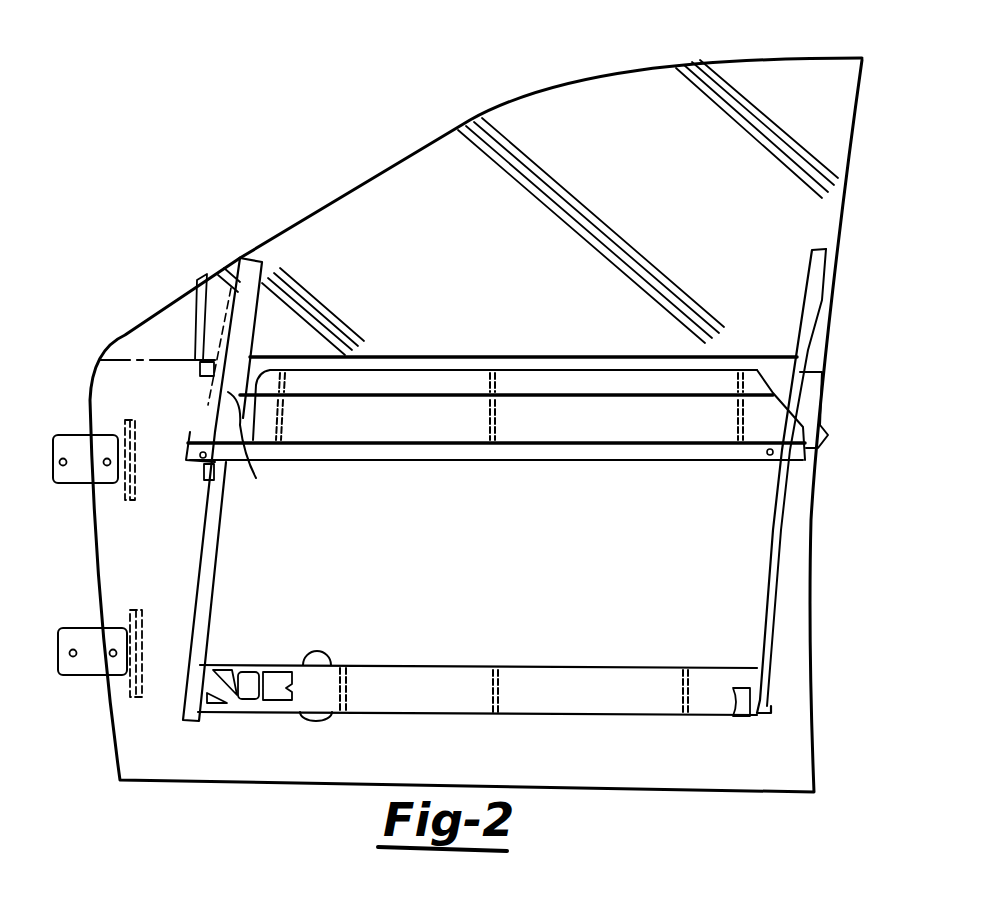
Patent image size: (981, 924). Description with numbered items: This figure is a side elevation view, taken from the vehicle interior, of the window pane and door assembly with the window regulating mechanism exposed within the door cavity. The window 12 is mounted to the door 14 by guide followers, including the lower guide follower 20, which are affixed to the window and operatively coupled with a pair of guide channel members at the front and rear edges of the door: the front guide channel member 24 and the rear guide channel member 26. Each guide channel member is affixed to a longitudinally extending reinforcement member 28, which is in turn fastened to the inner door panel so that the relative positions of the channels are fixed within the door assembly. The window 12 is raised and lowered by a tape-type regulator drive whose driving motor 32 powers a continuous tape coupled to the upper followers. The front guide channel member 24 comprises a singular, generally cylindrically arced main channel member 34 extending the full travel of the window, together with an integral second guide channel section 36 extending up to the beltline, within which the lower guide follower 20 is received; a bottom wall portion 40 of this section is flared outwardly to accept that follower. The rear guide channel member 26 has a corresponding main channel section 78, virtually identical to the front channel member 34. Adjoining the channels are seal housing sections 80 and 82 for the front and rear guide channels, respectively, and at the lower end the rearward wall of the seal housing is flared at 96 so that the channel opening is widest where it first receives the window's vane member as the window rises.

The window 12 is at (303, 208).
The door 14 is at (113, 512).
The lower guide follower 20 is at (220, 348).
The front guide channel member 24 is at (226, 293).
The rear guide channel member 26 is at (800, 503).
The reinforcement member 28 is at (496, 415).
The driving motor 32 is at (335, 652).
The main channel member 34 is at (197, 552).
The second guide channel section 36 is at (205, 390).
The bottom wall portion 40 is at (203, 472).
The main channel section 78 is at (772, 613).
The seal housing section 80 is at (270, 318).
The seal housing section 82 is at (832, 303).
The flared wall 96 is at (225, 425).